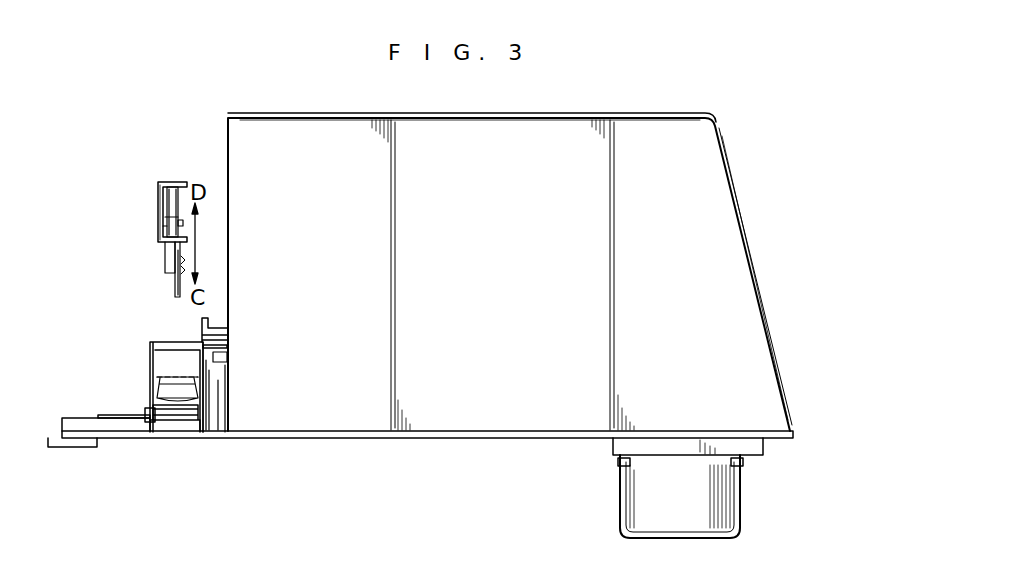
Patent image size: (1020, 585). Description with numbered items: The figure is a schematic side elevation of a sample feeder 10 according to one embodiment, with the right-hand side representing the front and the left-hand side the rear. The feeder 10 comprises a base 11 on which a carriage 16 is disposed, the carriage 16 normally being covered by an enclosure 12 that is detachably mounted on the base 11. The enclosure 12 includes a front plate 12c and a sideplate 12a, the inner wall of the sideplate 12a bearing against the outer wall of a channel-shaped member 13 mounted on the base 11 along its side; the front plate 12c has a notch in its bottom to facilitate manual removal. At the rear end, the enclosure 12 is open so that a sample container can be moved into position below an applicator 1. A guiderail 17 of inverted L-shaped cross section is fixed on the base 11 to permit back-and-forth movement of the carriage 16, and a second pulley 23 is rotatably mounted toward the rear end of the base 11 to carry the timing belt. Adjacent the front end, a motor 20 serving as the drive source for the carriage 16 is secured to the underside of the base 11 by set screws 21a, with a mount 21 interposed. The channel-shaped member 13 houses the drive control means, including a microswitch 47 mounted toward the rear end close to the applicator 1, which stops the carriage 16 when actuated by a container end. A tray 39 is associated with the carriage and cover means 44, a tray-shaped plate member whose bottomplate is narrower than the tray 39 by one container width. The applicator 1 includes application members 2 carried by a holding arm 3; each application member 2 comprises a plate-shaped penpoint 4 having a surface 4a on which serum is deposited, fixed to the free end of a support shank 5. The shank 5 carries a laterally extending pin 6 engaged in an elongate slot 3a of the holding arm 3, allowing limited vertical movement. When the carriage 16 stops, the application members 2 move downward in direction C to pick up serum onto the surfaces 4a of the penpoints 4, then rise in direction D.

The applicator 1 is at (152, 178).
The application member 2 is at (165, 245).
The holding arm 3 is at (167, 205).
The elongate slot 3a is at (160, 220).
The penpoint 4 is at (175, 278).
The surface 4a is at (178, 297).
The support shank 5 is at (158, 184).
The pin 6 is at (163, 228).
The sample feeder 10 is at (596, 99).
The base 11 is at (456, 439).
The enclosure 12 is at (460, 130).
The sideplate 12a is at (556, 130).
The front plate 12c is at (731, 200).
The channel-shaped member 13 is at (212, 436).
The carriage 16 is at (152, 432).
The guiderail 17 is at (78, 418).
The motor 20 is at (672, 520).
The mount 21 is at (760, 449).
The set screws 21a is at (620, 466).
The second pulley 23 is at (118, 415).
The tray 39 is at (153, 360).
The cover means 44 is at (222, 330).
The microswitch 47 is at (176, 382).